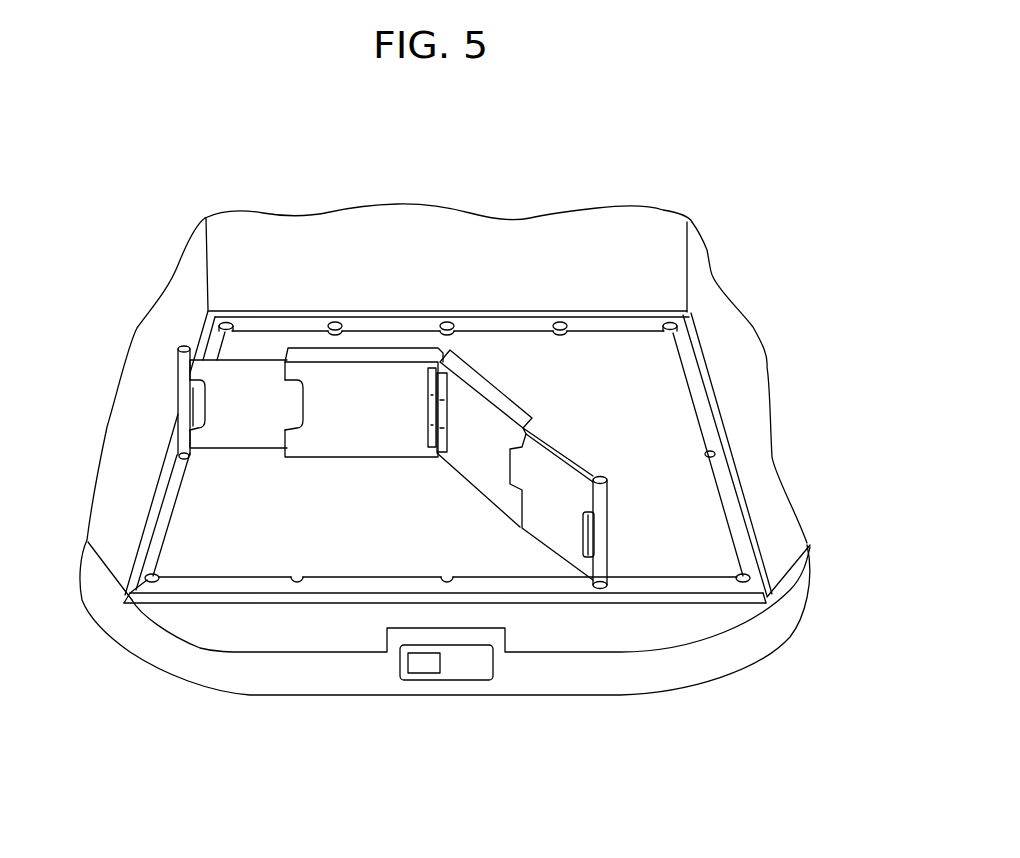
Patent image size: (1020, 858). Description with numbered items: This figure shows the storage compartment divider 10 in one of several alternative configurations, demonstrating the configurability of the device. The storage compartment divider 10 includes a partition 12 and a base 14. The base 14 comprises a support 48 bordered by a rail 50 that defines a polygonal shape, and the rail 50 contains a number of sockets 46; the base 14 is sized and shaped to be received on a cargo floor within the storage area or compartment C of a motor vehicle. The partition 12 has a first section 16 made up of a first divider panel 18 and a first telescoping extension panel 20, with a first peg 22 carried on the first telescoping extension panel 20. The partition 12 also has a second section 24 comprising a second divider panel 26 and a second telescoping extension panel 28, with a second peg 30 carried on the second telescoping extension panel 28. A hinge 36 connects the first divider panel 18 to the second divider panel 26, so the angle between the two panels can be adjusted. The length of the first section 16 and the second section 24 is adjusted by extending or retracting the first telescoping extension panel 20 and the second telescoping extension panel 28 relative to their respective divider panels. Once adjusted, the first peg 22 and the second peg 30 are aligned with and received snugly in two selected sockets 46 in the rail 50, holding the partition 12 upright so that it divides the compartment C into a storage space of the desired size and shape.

The storage compartment divider 10 is at (424, 403).
The partition 12 is at (444, 508).
The base 14 is at (130, 537).
The first section 16 is at (259, 335).
The first divider panel 18 is at (355, 405).
The first telescoping extension panel 20 is at (240, 385).
The first peg 22 is at (182, 405).
The second section 24 is at (545, 469).
The second divider panel 26 is at (508, 405).
The second telescoping extension panel 28 is at (553, 472).
The second peg 30 is at (612, 523).
The hinge 36 is at (430, 425).
The socket 46 is at (183, 460).
The support 48 is at (303, 529).
The rail 50 is at (705, 425).
The storage area or compartment C is at (722, 372).